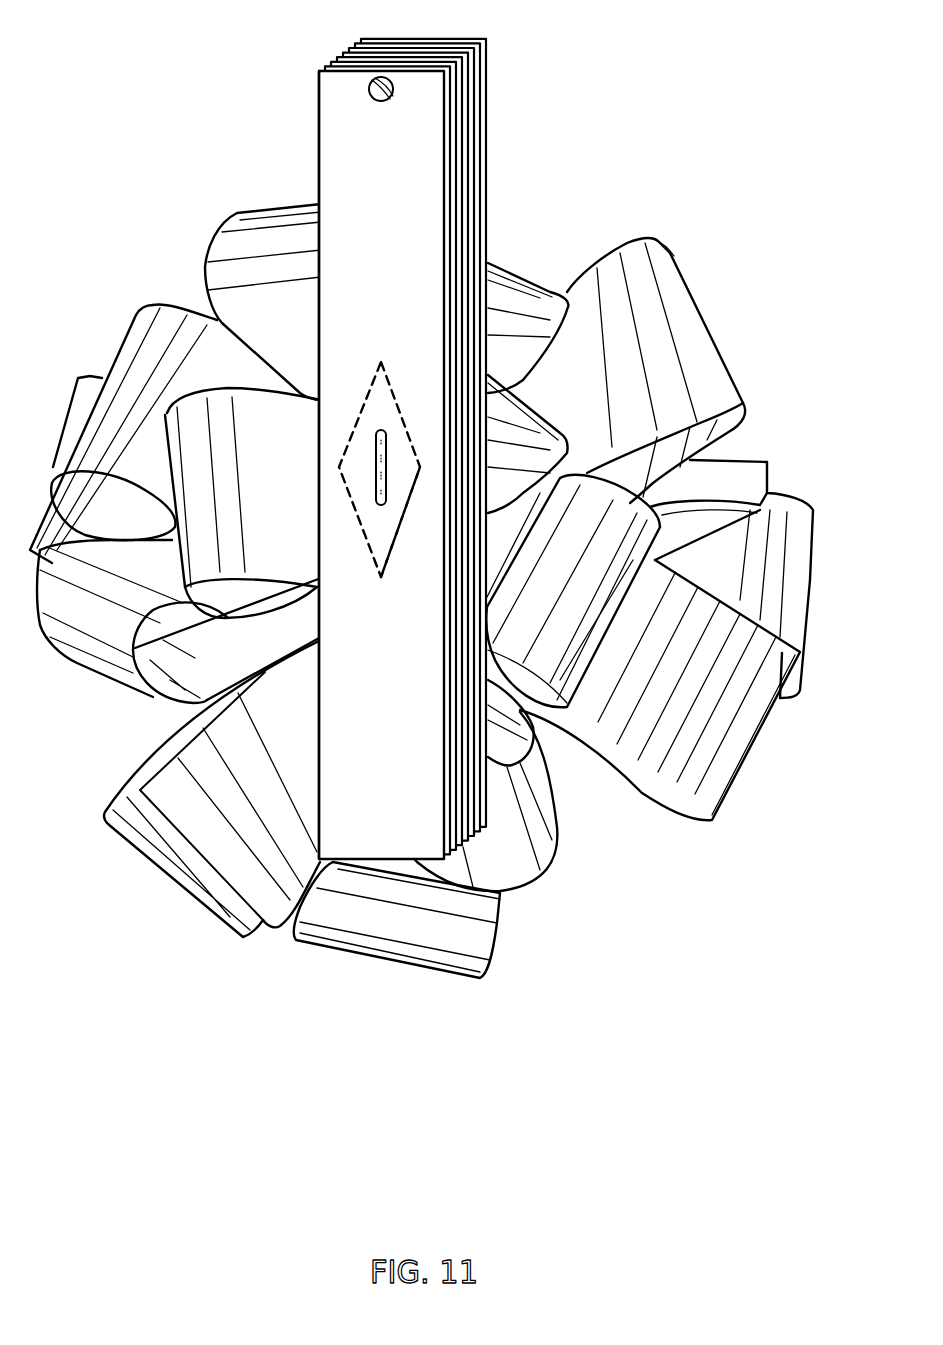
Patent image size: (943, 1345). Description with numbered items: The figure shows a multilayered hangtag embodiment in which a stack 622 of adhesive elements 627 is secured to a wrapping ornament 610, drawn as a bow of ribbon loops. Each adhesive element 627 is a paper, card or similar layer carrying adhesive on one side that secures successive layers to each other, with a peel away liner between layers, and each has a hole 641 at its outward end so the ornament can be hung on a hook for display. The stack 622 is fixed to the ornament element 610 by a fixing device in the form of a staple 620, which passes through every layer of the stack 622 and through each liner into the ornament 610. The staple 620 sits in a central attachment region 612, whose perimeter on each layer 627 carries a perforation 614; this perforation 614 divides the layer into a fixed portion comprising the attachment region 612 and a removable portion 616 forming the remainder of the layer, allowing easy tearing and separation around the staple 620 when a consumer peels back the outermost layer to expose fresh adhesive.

The wrapping ornament 610 is at (598, 350).
The attachment region 612 is at (383, 527).
The perforation 614 is at (357, 427).
The removable portion 616 is at (396, 226).
The staple 620 is at (387, 453).
The stack 622 is at (478, 187).
The adhesive element 627 is at (332, 162).
The hole 641 is at (378, 90).